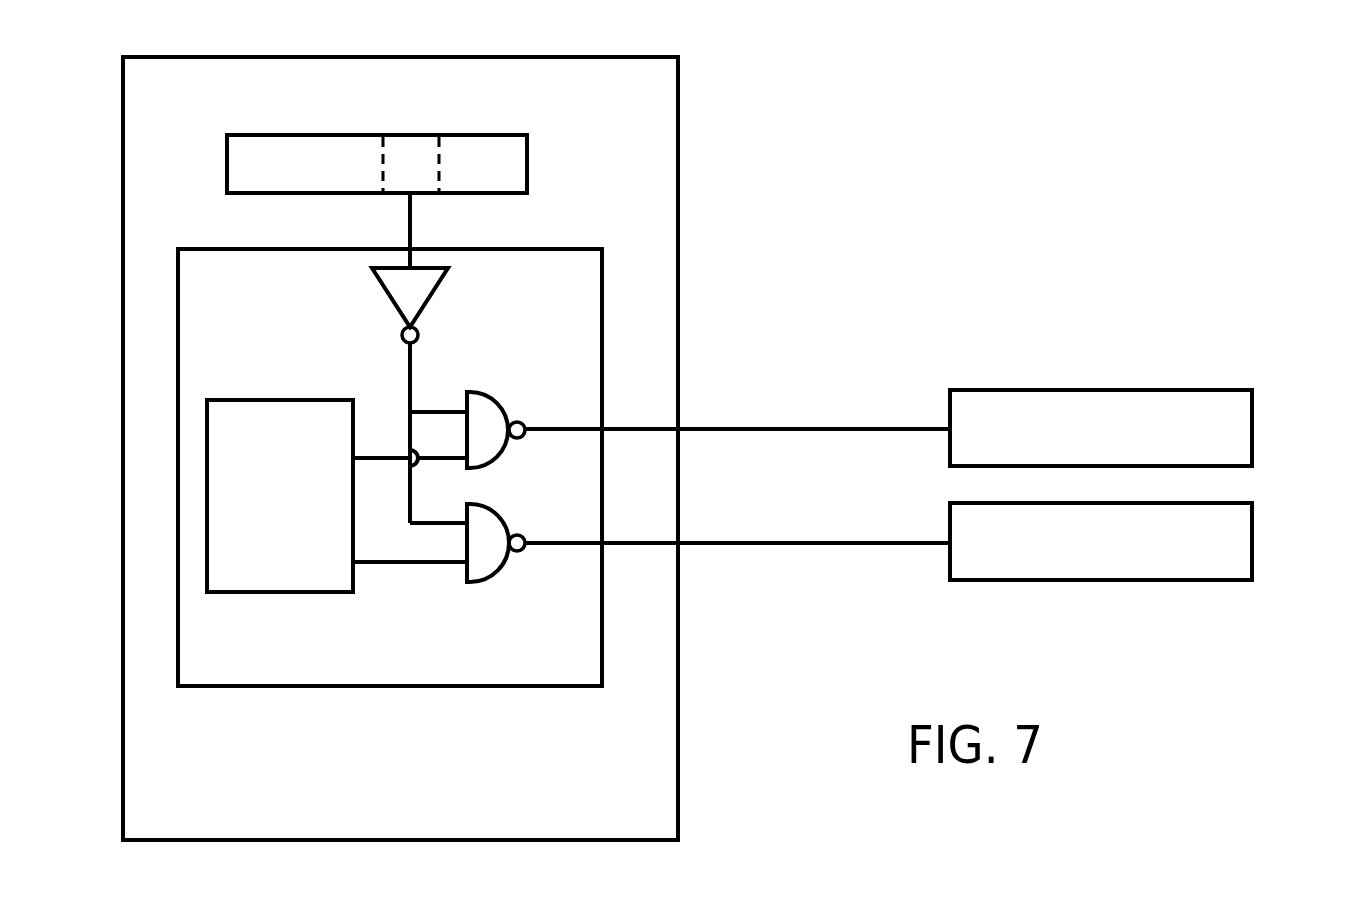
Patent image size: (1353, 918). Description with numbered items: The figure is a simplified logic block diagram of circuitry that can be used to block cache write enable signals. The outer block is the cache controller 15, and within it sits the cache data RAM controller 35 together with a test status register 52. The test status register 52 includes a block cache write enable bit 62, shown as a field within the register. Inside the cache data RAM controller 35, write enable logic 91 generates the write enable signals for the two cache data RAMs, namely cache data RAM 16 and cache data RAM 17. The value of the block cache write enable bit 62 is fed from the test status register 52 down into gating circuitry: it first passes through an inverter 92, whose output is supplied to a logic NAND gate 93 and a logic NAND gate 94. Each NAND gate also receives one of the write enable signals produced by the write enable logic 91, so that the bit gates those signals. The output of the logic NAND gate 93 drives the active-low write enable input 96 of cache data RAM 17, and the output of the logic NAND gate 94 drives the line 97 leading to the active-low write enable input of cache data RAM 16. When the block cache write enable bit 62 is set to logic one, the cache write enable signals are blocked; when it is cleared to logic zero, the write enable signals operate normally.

The cache controller 15 is at (680, 812).
The cache data RAM controller 35 is at (604, 680).
The test status register 52 is at (528, 147).
The block cache write enable bit 62 is at (393, 183).
The write enable logic 91 is at (322, 400).
The inverter 92 is at (443, 282).
The logic NAND gate 93 is at (508, 448).
The logic NAND gate 94 is at (508, 562).
The active-low write enable input 96 is at (815, 428).
The write enable line 97 is at (863, 542).
The cache data RAM 17 is at (1254, 447).
The cache data RAM 16 is at (1254, 552).